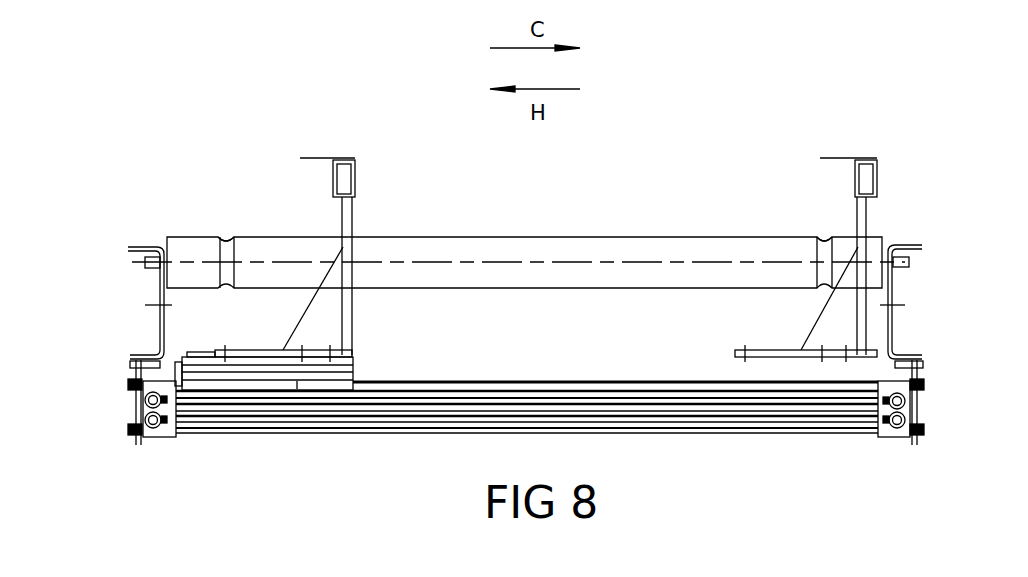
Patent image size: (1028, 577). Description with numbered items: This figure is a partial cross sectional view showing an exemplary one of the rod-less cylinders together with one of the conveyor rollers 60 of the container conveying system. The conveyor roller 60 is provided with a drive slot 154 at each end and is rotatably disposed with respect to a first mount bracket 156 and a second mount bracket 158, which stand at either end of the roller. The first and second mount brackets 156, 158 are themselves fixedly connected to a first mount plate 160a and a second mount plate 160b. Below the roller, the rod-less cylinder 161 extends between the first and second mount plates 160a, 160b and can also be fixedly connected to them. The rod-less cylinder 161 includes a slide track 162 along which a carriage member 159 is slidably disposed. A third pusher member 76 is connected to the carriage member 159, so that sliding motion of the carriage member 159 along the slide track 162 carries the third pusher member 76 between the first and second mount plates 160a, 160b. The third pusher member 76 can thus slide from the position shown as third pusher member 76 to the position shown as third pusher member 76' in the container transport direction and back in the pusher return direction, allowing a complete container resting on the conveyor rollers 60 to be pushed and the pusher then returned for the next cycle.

The conveyor roller 60 is at (270, 238).
The drive slot 154 is at (226, 236).
The third pusher member 76 is at (333, 260).
The third pusher member (second position) 76' is at (849, 260).
The first mount bracket 156 is at (160, 330).
The second mount bracket 158 is at (893, 340).
The slide track 162 is at (430, 385).
The carriage member 159 is at (300, 390).
The rod-less cylinder 161 is at (228, 405).
The first mount plate 160a is at (138, 407).
The second mount plate 160b is at (912, 402).